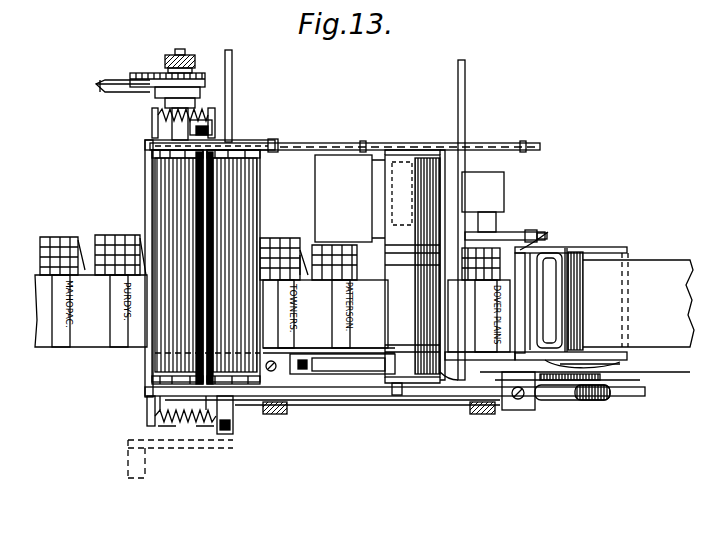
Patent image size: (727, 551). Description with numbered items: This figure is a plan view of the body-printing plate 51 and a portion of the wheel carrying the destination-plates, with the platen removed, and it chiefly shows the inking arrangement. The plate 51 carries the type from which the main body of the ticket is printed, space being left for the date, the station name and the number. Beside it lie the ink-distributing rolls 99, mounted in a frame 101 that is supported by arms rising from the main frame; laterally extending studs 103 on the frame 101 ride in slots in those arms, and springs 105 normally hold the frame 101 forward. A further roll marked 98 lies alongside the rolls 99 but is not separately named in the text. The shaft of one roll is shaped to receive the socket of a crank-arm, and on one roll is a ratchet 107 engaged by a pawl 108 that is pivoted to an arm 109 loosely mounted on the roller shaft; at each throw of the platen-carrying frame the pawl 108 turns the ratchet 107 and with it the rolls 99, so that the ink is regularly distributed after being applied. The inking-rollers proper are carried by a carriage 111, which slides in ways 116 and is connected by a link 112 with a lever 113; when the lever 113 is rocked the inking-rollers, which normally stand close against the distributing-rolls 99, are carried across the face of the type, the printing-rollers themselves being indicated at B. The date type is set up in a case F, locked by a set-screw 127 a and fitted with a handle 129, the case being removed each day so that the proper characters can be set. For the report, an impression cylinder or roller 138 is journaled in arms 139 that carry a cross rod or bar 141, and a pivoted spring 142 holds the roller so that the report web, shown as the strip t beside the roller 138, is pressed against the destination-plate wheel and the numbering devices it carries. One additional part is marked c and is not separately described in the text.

The plate 51 is at (315, 183).
The drum 98 is at (177, 267).
The ink-distributing rolls 99 is at (207, 267).
The frame 101 is at (148, 141).
The studs 103 is at (212, 126).
The springs 105 is at (200, 113).
The ratchet 107 is at (206, 88).
The pawl 108 is at (142, 90).
The arm 109 is at (162, 80).
The carriage 111 is at (425, 157).
The link 112 is at (523, 220).
The lever 113 is at (520, 224).
The ways 116 is at (538, 147).
The set-screw 127 is at (305, 360).
The handle 129 is at (441, 378).
The impression cylinder or roller 138 is at (584, 309).
The arms 139 is at (608, 258).
The cross rod or bar 141 is at (566, 255).
The spring 142 is at (591, 400).
The printing-rollers B is at (406, 272).
The set-screw a is at (324, 317).
The handle c is at (95, 86).
The case F is at (300, 426).
The ticket strip t is at (647, 268).